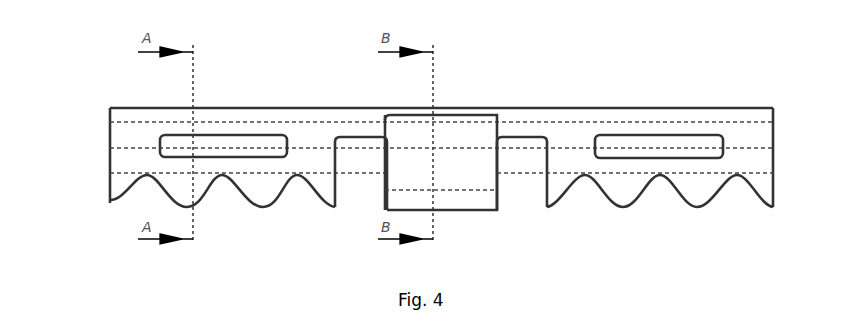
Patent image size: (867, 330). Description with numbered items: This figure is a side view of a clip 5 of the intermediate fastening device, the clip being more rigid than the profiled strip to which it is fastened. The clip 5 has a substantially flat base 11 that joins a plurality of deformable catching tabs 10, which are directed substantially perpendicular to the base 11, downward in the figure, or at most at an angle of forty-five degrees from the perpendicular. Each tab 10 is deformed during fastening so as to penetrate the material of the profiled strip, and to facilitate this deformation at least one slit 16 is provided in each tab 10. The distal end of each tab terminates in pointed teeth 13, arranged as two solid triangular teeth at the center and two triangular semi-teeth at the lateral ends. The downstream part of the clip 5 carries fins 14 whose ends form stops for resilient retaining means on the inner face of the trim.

The clip 5 is at (118, 70).
The deformable catching tabs 10 is at (256, 122).
The base 11 is at (588, 110).
The pointed teeth 13 is at (327, 195).
The fins 14 is at (480, 192).
The slit 16 is at (183, 148).